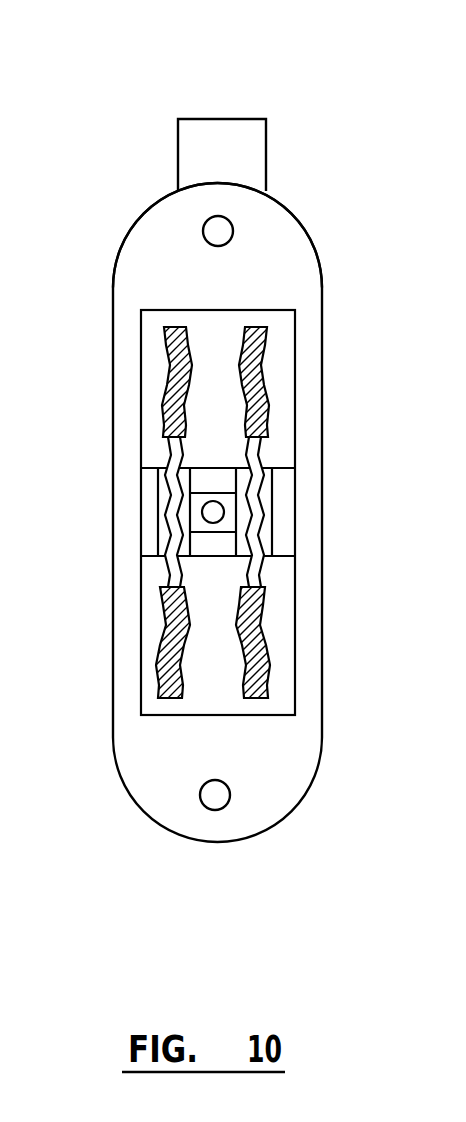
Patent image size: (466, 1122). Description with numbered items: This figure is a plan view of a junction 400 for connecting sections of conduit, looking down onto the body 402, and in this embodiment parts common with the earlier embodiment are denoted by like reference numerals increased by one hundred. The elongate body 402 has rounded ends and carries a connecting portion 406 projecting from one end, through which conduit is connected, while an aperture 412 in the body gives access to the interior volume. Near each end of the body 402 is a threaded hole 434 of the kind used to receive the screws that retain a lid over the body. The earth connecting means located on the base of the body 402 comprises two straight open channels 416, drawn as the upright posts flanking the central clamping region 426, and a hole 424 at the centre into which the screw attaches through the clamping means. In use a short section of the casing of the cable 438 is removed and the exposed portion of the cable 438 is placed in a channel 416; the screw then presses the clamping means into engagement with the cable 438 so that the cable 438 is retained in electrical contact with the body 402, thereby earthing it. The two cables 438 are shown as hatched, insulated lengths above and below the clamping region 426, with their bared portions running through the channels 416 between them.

The sensor assembly 400 is at (340, 261).
The body 402 is at (170, 277).
The connector tab 406 is at (224, 143).
The window cavity 412 is at (297, 640).
The straight open channel 416 is at (163, 488).
The hole 424 is at (210, 513).
The mounting block 426 is at (213, 545).
The mounting holes 434 is at (203, 231).
The cable 438 is at (163, 378).